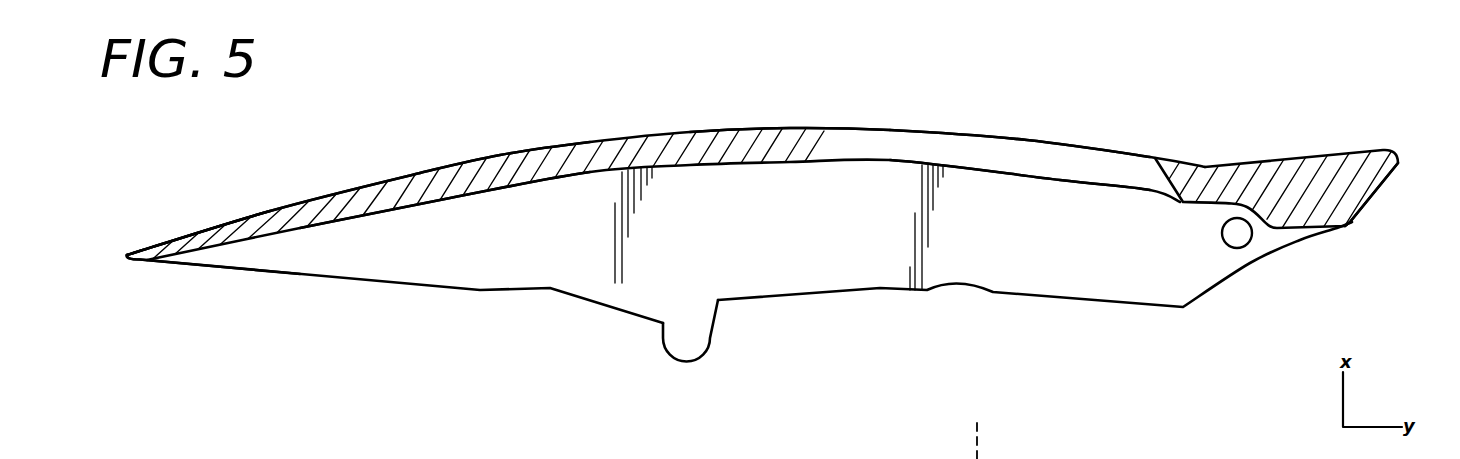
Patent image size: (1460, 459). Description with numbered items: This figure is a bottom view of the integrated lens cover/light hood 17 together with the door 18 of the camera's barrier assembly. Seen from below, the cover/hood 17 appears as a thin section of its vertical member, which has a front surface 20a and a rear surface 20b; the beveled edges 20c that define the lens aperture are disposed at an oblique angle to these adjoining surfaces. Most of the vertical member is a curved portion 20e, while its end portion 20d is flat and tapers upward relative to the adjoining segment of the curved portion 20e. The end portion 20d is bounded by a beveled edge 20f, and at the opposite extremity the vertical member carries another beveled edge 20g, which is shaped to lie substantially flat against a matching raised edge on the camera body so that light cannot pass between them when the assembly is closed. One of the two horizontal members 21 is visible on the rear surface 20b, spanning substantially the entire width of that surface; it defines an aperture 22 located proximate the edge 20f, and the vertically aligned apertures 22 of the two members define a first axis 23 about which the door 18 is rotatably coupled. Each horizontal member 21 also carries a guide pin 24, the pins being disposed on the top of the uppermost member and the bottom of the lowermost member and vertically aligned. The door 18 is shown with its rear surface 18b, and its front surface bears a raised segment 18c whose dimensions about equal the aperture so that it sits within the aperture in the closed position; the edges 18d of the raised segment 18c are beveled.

The integrated lens cover/light hood 17 is at (170, 227).
The door 18 is at (1022, 139).
The rear surface 18b is at (1013, 175).
The raised segment 18c is at (910, 131).
The edges of the raised segment 18d is at (827, 130).
The front surface 20a is at (343, 188).
The rear surface 20b is at (428, 204).
The edges 20c is at (813, 129).
The end portion 20d is at (1265, 161).
The curved portion 20e is at (497, 156).
The edge 20f is at (1380, 190).
The edge 20g is at (140, 261).
The horizontal members 21 is at (801, 250).
The aperture 22 is at (1252, 237).
The first axis 23 is at (1000, 458).
The guide pin 24 is at (710, 335).